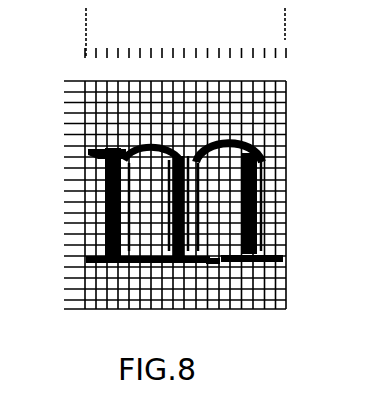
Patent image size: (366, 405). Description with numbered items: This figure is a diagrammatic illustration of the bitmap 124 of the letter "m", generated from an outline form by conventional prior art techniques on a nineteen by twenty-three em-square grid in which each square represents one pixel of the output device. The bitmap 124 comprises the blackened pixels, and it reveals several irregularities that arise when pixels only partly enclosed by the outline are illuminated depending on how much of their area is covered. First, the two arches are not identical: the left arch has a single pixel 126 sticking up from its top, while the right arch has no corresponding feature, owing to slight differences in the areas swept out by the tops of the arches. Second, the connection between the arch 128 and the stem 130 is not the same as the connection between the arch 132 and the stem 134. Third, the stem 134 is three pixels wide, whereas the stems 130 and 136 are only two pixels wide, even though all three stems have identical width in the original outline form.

The bitmap 124 is at (251, 195).
The single pixel 126 is at (152, 135).
The arch 128 is at (138, 129).
The stem 130 is at (96, 226).
The arch 132 is at (232, 129).
The stem 134 is at (160, 222).
The stem 136 is at (255, 241).